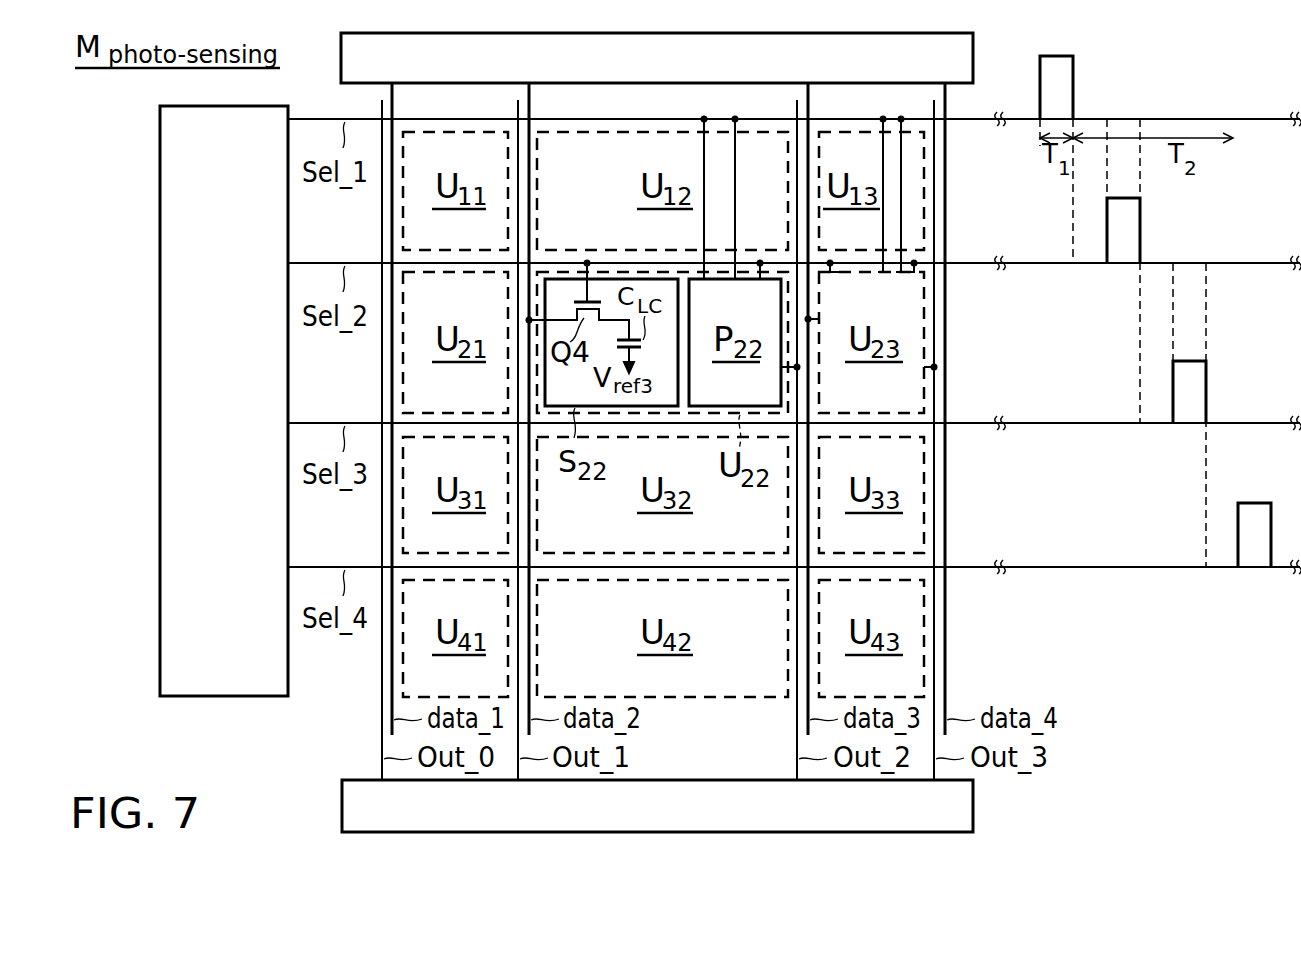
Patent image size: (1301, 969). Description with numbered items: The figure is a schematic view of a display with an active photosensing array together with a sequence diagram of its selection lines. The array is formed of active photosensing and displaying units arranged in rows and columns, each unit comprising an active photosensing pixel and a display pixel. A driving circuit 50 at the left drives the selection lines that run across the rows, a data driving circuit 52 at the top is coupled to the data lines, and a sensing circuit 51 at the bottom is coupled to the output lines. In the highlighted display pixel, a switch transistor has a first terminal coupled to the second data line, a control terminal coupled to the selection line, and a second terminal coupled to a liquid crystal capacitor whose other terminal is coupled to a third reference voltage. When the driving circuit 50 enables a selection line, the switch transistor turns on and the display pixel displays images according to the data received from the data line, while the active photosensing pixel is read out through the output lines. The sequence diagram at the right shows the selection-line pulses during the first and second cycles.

The driving circuit 50 is at (225, 698).
The sensing circuit 51 is at (975, 806).
The data driving circuit 52 is at (975, 58).